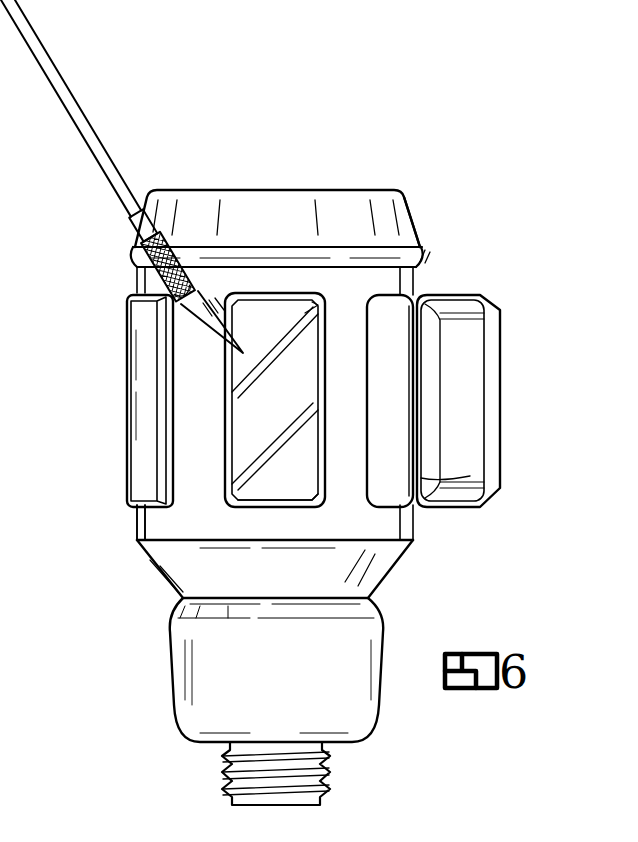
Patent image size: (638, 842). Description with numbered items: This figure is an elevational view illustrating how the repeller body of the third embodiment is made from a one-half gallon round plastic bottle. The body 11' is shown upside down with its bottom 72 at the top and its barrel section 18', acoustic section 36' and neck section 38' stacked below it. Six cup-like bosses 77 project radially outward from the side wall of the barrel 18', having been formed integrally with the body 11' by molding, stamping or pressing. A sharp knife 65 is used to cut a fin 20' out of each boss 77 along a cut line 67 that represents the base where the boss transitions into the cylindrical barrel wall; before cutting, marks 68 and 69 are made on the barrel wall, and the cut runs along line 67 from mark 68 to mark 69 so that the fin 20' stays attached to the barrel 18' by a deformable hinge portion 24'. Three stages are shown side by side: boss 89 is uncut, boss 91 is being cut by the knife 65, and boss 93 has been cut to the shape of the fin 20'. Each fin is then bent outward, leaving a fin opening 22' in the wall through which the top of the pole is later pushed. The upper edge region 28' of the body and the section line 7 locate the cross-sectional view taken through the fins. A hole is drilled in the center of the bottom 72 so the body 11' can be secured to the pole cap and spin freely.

The body 11' is at (277, 329).
The barrel section 18' is at (279, 576).
The fin 20' is at (478, 401).
The fin opening 22' is at (417, 419).
The hinge portion 24' is at (481, 470).
The cap flange 28' is at (436, 230).
The acoustic section 36' is at (296, 670).
The neck section 38' is at (302, 782).
The sharp knife 65 is at (69, 115).
The cut line 67 is at (227, 432).
The mark 68 is at (318, 306).
The mark 69 is at (306, 490).
The bottom 72 is at (235, 190).
The boss 77 is at (108, 490).
The boss 89 is at (147, 327).
The boss 91 is at (305, 450).
The boss 93 is at (490, 363).
The section line 7- 7 is at (148, 398).